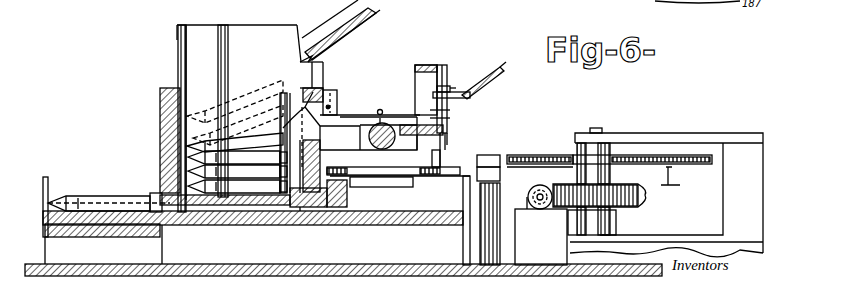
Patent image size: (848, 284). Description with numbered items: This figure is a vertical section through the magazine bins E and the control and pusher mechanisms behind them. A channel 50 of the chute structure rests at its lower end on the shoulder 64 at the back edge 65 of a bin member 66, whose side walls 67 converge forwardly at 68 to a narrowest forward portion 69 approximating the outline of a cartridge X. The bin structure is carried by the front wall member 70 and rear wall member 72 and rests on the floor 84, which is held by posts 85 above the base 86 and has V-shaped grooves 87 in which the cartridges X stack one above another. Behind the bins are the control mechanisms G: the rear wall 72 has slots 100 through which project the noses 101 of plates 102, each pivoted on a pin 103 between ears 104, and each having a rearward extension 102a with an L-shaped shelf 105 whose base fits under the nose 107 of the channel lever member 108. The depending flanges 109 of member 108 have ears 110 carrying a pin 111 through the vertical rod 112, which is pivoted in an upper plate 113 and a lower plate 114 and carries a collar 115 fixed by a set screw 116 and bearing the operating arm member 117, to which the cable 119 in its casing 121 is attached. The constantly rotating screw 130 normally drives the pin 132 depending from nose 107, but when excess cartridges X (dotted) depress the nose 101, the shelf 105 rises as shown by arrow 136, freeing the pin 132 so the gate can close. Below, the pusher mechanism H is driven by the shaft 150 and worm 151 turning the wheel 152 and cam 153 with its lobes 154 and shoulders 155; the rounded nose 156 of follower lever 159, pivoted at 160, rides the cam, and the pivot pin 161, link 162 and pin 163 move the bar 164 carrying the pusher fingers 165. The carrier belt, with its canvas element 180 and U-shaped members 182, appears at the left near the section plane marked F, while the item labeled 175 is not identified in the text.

The channel 50 is at (352, 10).
The shoulder 64 is at (315, 59).
The back edge 65 is at (313, 70).
The bin member 66 is at (177, 30).
The side wall 67 is at (238, 29).
The converging portion 68 is at (202, 50).
The narrowest forward portion 69 is at (178, 72).
The front wall member 70 is at (162, 108).
The rear wall member 72 is at (307, 195).
The floor 84 is at (360, 224).
The post 85 is at (195, 247).
The base 86 is at (343, 261).
The V-shaped groove 87 is at (430, 208).
The slot 100 is at (318, 133).
The nose 101 is at (280, 138).
The plate 102 is at (302, 100).
The horizontal rearward extension portion 102a is at (368, 142).
The pin 103 is at (343, 101).
The ear 104 is at (327, 82).
The L-shaped horizontal shelf 105 is at (344, 107).
The nose 107 is at (381, 108).
The channel lever member 108 is at (450, 110).
The depending side flange 109 is at (418, 134).
The ear 110 is at (450, 118).
The pin 111 is at (447, 127).
The vertical rod 112 is at (441, 66).
The upper plate 113 is at (420, 66).
The lower plate 114 is at (447, 134).
The collar 115 is at (451, 86).
The set screw 116 is at (465, 80).
The operating arm member 117 is at (470, 96).
The cable 119 is at (492, 79).
The cable casing 121 is at (488, 84).
The screw 130 is at (388, 150).
The pin 132 is at (384, 114).
The arrow 136 is at (369, 110).
The shaft 150 is at (540, 194).
The worm 151 is at (529, 195).
The wheel 152 is at (642, 201).
The cam 153 is at (618, 161).
The lobe 154 is at (680, 168).
The shoulder 155 is at (567, 153).
The rounded nose 156 is at (487, 155).
The follower lever 159 is at (478, 177).
The pivot 160 is at (491, 169).
The pivot pin 161 is at (437, 158).
The link 162 is at (413, 180).
The pin 163 is at (326, 173).
The bar 164 is at (345, 178).
The pusher finger 165 is at (178, 208).
The frame 175 is at (597, 128).
The canvas element 180 is at (86, 240).
The U-shaped member 182 is at (100, 210).
The bins E is at (298, 21).
The section F is at (53, 216).
The control mechanisms G is at (371, 85).
The pusher mechanism H is at (337, 196).
The cartridge X is at (241, 113).